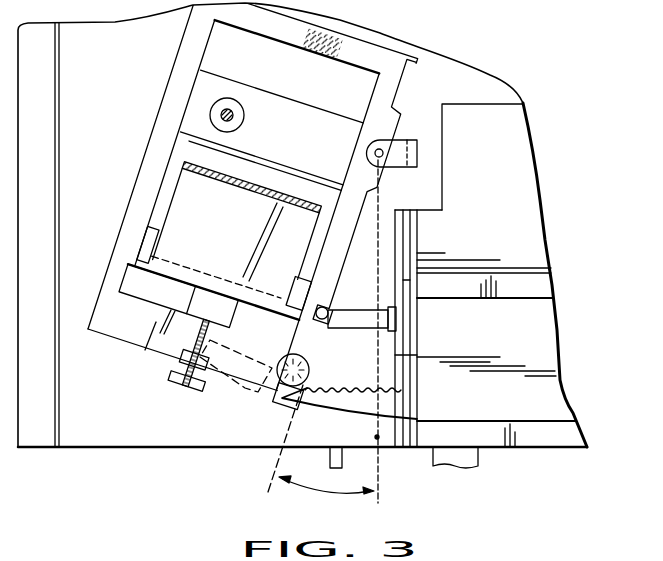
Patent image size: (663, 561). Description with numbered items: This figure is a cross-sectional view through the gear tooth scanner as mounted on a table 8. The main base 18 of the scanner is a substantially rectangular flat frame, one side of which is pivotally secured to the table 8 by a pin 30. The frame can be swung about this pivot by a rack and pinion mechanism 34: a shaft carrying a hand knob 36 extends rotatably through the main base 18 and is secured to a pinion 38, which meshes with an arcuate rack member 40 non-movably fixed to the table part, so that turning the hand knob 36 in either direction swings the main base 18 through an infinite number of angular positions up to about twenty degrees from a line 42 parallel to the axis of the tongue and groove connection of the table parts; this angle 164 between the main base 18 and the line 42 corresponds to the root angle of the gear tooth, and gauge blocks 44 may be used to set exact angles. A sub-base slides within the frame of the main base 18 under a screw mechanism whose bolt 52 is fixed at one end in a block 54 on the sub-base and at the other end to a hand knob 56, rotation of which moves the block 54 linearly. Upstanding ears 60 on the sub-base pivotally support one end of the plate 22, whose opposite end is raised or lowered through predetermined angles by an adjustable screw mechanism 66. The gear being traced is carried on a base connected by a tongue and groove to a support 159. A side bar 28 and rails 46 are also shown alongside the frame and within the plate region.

The table 8 is at (481, 93).
The main base 18 is at (168, 92).
The plate 22 is at (238, 237).
The side bar 28 is at (384, 98).
The pin 30 is at (382, 160).
The rack and pinion mechanism 34 is at (319, 420).
The hand knob 36 is at (308, 358).
The pinion 38 is at (250, 375).
The arcuate rack member 40 is at (347, 405).
The line 42 is at (378, 440).
The gauge blocks 44 is at (352, 318).
The rails 46 is at (180, 132).
The bolt 52 is at (205, 296).
The block 54 is at (222, 318).
The hand knob 56 is at (190, 378).
The upstanding ears 60 is at (152, 238).
The adjustable screw mechanism 66 is at (248, 120).
The support 159 is at (524, 448).
The angle 164 is at (326, 496).